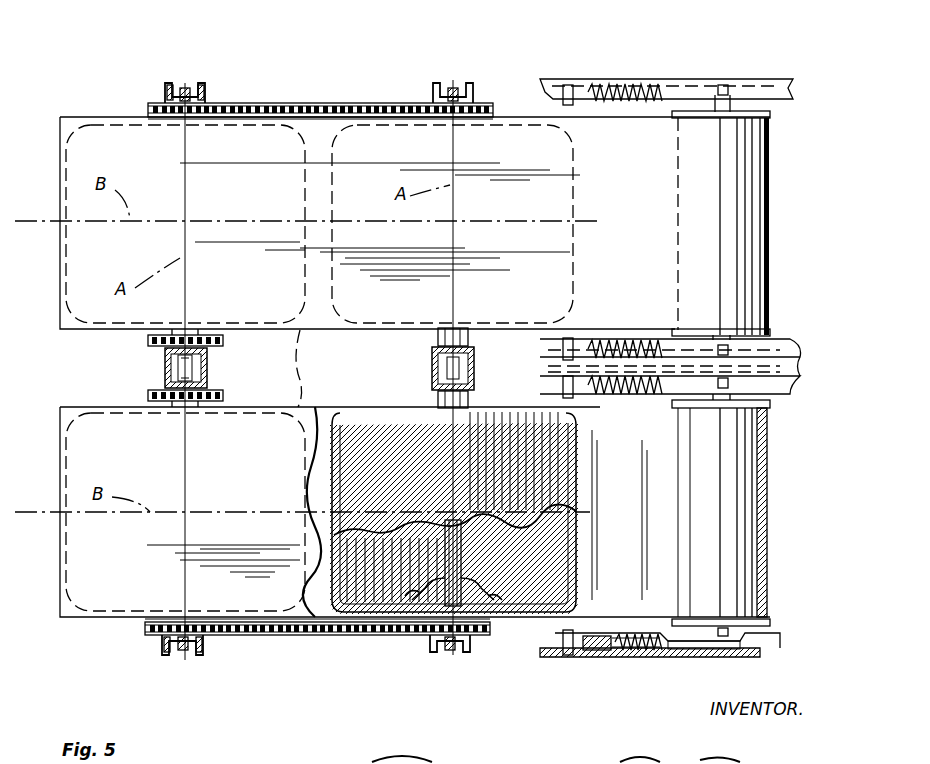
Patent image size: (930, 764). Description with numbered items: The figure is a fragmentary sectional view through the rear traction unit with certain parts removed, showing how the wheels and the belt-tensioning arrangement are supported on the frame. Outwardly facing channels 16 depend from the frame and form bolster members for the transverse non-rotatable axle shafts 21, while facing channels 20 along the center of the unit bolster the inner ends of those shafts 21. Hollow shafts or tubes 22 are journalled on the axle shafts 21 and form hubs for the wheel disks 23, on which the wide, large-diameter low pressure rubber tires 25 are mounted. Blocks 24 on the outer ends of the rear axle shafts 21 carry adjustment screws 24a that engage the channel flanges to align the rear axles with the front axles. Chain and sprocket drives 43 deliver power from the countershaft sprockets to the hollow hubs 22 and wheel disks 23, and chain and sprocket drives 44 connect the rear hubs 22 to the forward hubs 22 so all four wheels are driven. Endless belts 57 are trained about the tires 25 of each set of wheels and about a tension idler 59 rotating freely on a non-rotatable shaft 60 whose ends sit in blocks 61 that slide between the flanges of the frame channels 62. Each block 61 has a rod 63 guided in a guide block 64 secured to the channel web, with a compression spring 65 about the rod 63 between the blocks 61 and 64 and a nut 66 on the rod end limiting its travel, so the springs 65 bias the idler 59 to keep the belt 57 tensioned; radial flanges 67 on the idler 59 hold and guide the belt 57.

The outwardly facing channels 16 is at (210, 92).
The facing channels 20 is at (206, 378).
The non-rotatable axle shafts 21 is at (190, 368).
The hollow shafts or tubes 22 is at (465, 536).
The wheel disks 23 is at (485, 617).
The blocks 24 is at (187, 86).
The adjustment screws 24a is at (173, 85).
The low pressure rubber tires 25 is at (578, 232).
The chain and sprocket drives 43 is at (148, 398).
The chain and sprocket drives 44 is at (315, 104).
The endless belts 57 is at (770, 236).
The tension idler 59 is at (770, 117).
The transverse non-rotatable shaft 60 is at (730, 632).
The blocks 61 is at (695, 645).
The channels 62 is at (732, 80).
The rod 63 is at (633, 640).
The guide blocks 64 is at (612, 655).
The compression spring 65 is at (637, 102).
The nut 66 is at (568, 105).
The radial flanges 67 is at (752, 112).